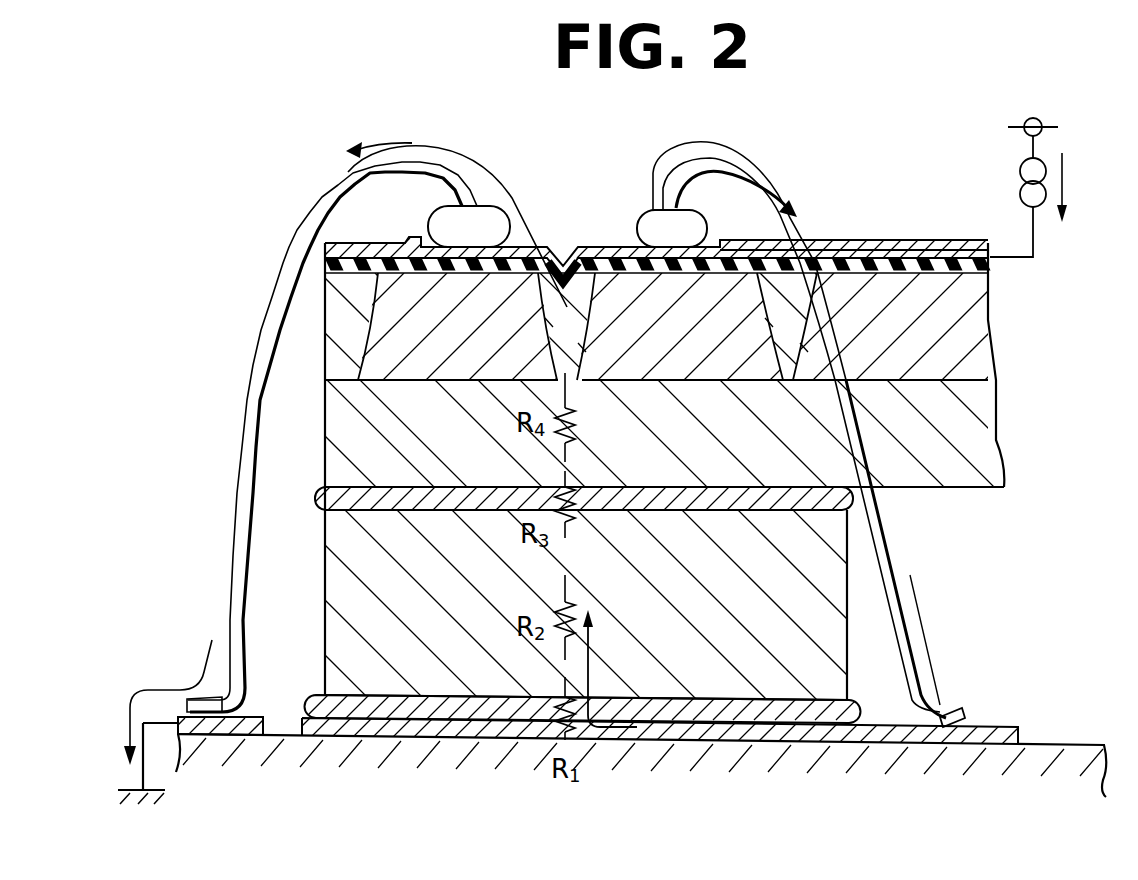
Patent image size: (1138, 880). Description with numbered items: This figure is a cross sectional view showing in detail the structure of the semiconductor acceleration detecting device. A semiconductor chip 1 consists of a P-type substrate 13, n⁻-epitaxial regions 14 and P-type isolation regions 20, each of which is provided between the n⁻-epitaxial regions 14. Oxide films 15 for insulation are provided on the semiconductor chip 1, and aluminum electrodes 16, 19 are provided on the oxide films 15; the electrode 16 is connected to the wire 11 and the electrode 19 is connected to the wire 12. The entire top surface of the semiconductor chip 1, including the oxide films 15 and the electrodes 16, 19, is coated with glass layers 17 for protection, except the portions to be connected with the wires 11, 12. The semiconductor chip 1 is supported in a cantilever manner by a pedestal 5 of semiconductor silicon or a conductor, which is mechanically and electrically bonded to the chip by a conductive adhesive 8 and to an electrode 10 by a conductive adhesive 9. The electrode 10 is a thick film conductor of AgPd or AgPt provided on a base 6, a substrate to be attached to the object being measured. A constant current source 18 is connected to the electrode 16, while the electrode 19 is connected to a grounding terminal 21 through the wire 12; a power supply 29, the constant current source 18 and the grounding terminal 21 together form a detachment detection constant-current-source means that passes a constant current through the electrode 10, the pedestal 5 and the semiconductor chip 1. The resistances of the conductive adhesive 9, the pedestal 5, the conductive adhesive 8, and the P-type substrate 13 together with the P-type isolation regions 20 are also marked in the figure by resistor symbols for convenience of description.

The semiconductor chip 1 is at (1000, 340).
The pedestal 5 is at (817, 627).
The base 6 is at (1080, 745).
The conductive adhesive 8 is at (852, 500).
The conductive adhesive 9 is at (857, 708).
The electrode 10 is at (1012, 727).
The wire 11 is at (862, 448).
The wire 12 is at (268, 325).
The P-type substrate 13 is at (973, 427).
The n⁻-epitaxial regions 14 is at (383, 360).
The oxide films 15 is at (400, 263).
The electrode 16 is at (850, 258).
The glass layers 17 is at (350, 250).
The constant current source 18 is at (1038, 205).
The electrode 19 is at (518, 212).
The P-type isolation regions 20 is at (577, 287).
The grounding terminal 21 is at (140, 780).
The power supply 29 is at (1042, 122).